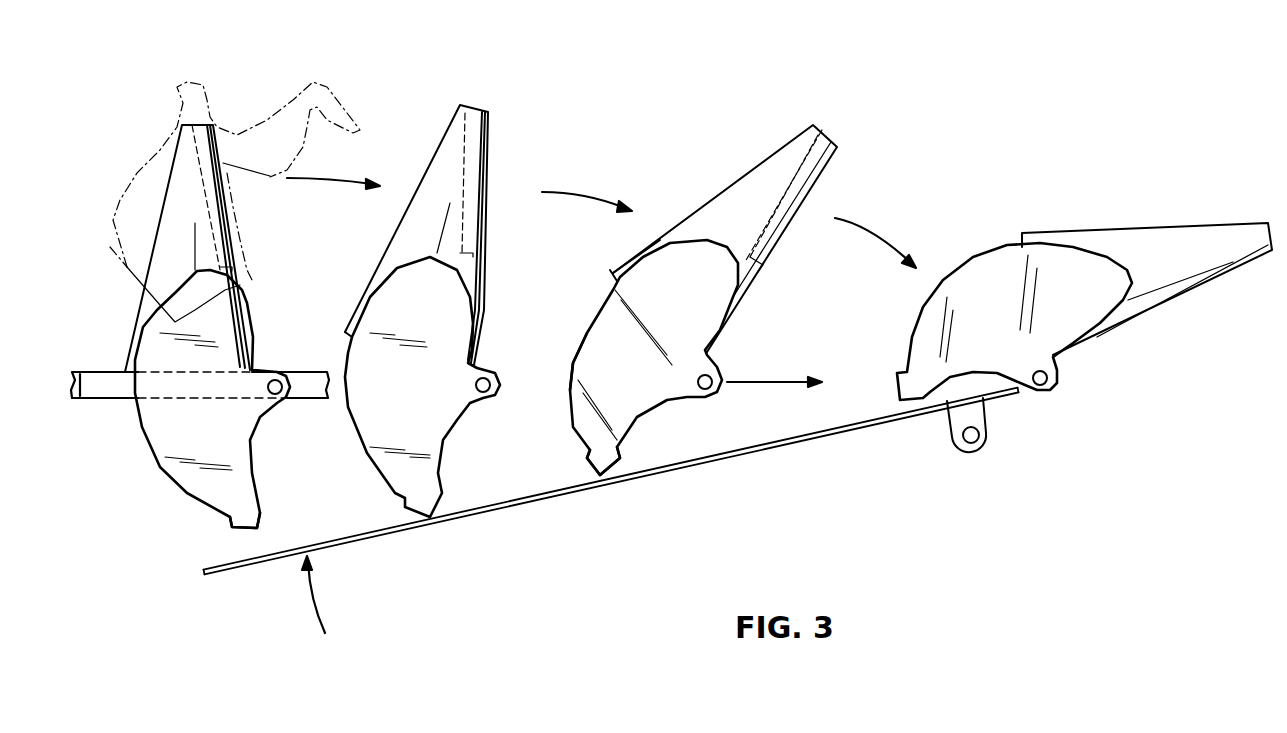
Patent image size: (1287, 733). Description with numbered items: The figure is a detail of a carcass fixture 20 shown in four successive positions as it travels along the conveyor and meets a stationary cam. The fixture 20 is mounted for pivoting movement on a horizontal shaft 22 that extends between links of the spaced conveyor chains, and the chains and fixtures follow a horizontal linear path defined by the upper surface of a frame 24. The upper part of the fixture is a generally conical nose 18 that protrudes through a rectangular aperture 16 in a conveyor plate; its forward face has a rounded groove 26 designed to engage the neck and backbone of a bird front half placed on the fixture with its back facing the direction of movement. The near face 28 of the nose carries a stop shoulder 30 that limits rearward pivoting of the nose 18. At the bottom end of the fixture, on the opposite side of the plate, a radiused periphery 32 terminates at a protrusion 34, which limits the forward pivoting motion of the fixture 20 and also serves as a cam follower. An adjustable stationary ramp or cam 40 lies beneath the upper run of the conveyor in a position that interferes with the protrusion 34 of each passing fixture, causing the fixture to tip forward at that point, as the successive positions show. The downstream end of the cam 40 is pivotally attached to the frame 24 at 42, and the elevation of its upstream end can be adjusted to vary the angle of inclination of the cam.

The rectangular aperture 16 is at (100, 370).
The nose 18 is at (489, 133).
The carcass fixture 20 is at (214, 434).
The horizontal shaft 22 is at (280, 373).
The frame 24 is at (110, 387).
The rounded groove 26 is at (808, 170).
The near face 28 is at (702, 205).
The stop shoulder 30 is at (613, 273).
The radiused periphery 32 is at (578, 327).
The protrusion 34 is at (262, 517).
The cam 40 is at (705, 463).
The pivotal attachment 42 is at (983, 440).